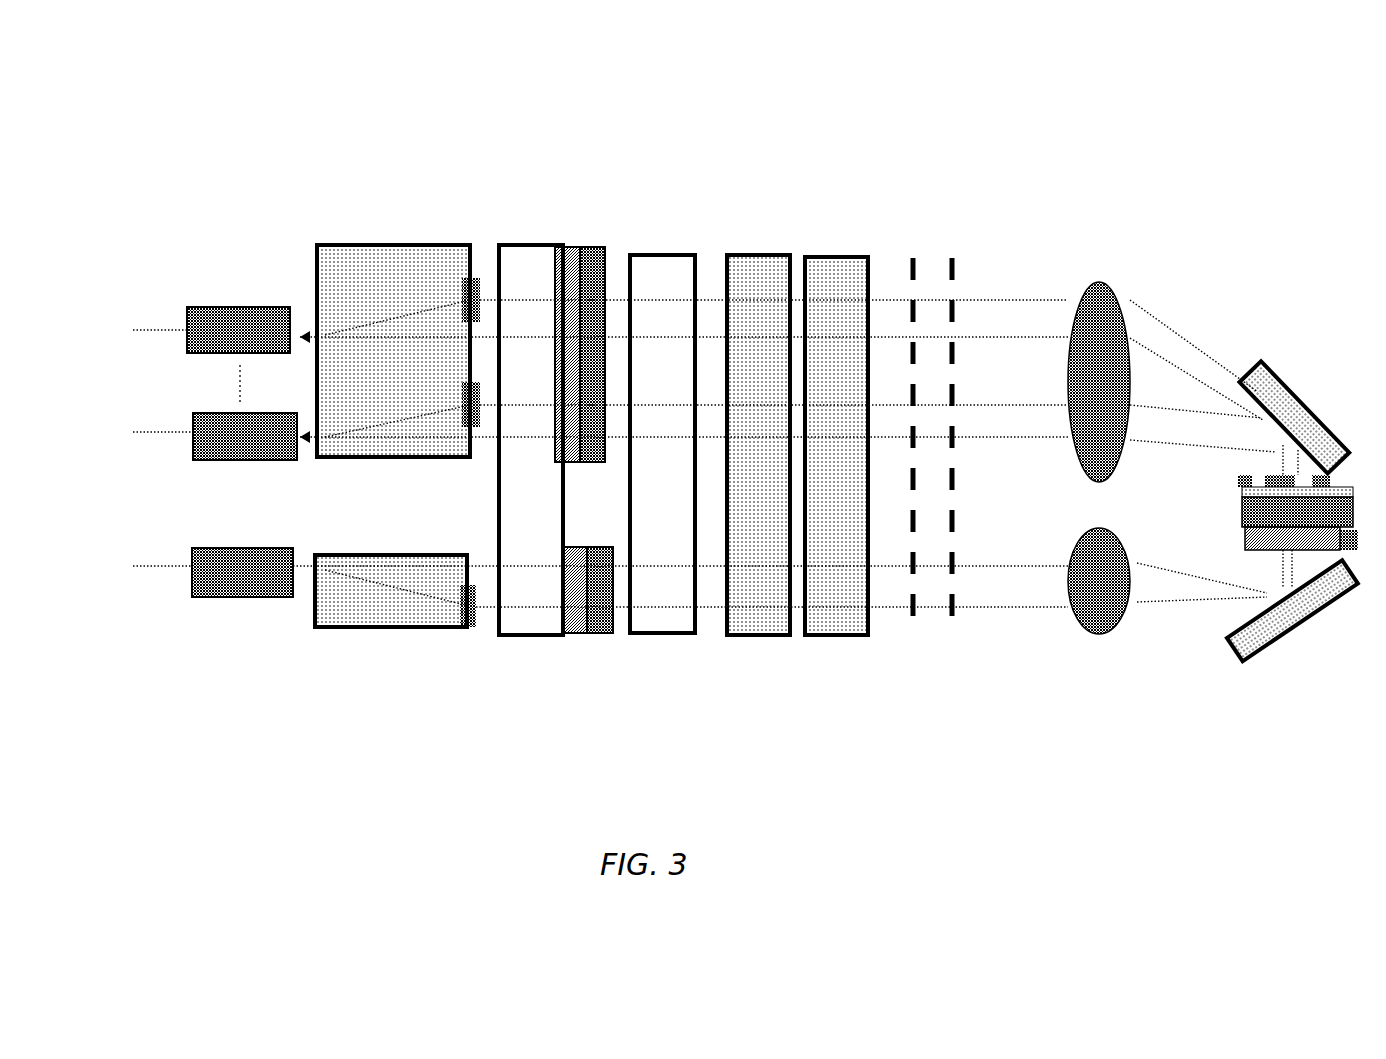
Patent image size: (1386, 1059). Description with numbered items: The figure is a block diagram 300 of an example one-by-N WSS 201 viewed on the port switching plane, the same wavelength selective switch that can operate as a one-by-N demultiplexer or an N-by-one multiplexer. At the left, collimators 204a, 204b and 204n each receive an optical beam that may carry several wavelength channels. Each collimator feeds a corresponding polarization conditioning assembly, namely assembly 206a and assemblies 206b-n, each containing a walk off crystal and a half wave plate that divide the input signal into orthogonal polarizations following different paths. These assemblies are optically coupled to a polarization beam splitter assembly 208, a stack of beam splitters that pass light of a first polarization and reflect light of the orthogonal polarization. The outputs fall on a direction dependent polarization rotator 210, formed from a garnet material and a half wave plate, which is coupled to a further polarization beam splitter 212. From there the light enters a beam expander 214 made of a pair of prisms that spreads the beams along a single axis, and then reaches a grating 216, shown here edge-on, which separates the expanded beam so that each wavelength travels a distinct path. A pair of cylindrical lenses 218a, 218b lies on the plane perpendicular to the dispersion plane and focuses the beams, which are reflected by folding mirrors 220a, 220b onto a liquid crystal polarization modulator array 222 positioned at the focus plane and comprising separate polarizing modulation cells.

The block diagram 300 is at (206, 92).
The 1×N WSS 201 is at (418, 814).
The collimator 204a is at (242, 591).
The collimator 204b is at (245, 452).
The collimator 204n is at (238, 313).
The polarization conditioning assembly 206a is at (395, 607).
The polarization conditioning assemblies 206b-n is at (398, 335).
The polarization beam splitter assembly 208 is at (510, 235).
The direction dependent polarization rotator 210 is at (587, 218).
The polarization beam splitter 212 is at (660, 235).
The beam expander 214 is at (798, 222).
The grating 216 is at (944, 242).
The cylindrical lens 218a is at (1100, 640).
The cylindrical lens 218b is at (1092, 274).
The folding mirror 220a is at (1270, 658).
The folding mirror 220b is at (1289, 360).
The liquid crystal polarization modulator array 222 is at (1230, 517).